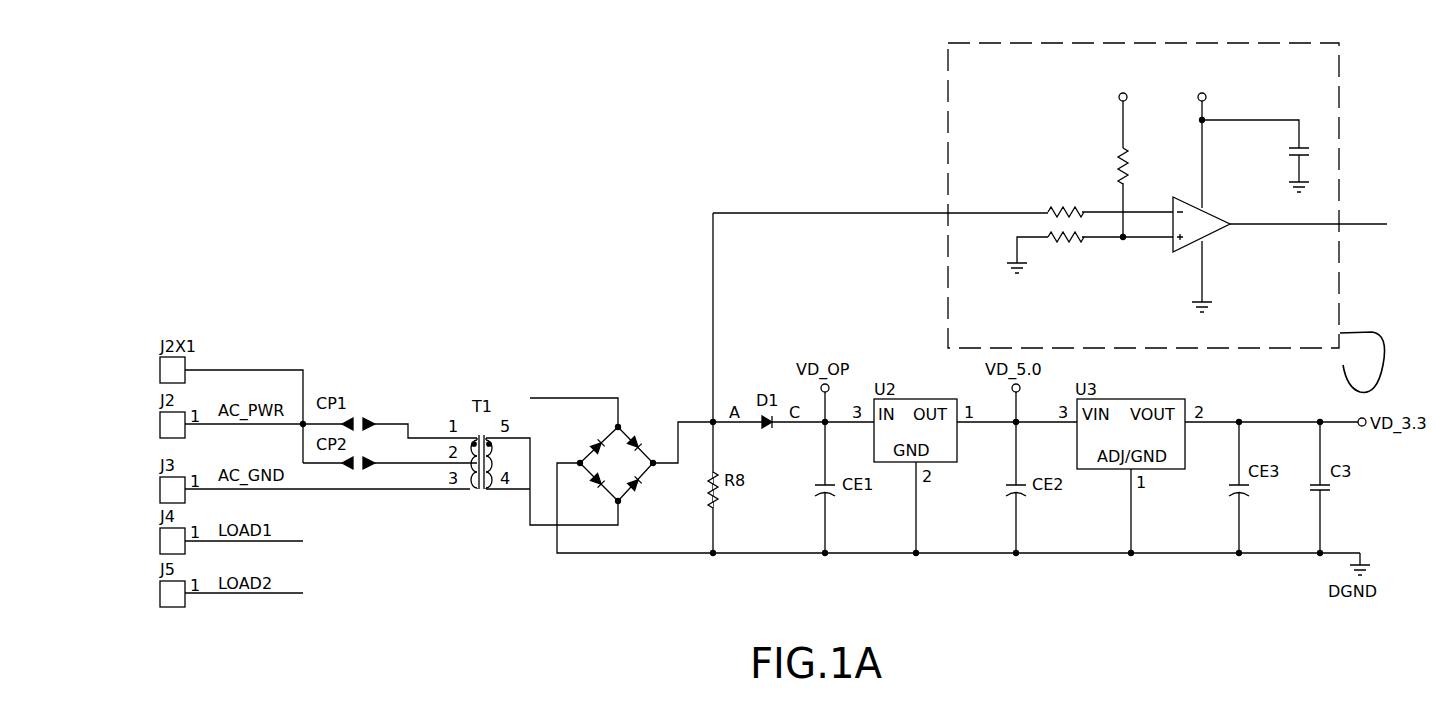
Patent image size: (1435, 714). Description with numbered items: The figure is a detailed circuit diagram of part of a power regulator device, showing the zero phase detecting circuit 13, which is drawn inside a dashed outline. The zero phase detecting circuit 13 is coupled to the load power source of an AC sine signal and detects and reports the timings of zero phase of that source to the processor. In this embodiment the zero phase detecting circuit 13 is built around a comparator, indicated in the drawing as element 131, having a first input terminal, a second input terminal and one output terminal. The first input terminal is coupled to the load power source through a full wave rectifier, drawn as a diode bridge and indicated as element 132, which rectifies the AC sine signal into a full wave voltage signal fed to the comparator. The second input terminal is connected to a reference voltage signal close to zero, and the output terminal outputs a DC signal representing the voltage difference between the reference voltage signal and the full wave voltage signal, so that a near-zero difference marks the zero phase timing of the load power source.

The zero phase detecting circuit 13 is at (946, 118).
The comparator 131 is at (1205, 226).
The bridge rectifier 132 is at (647, 478).